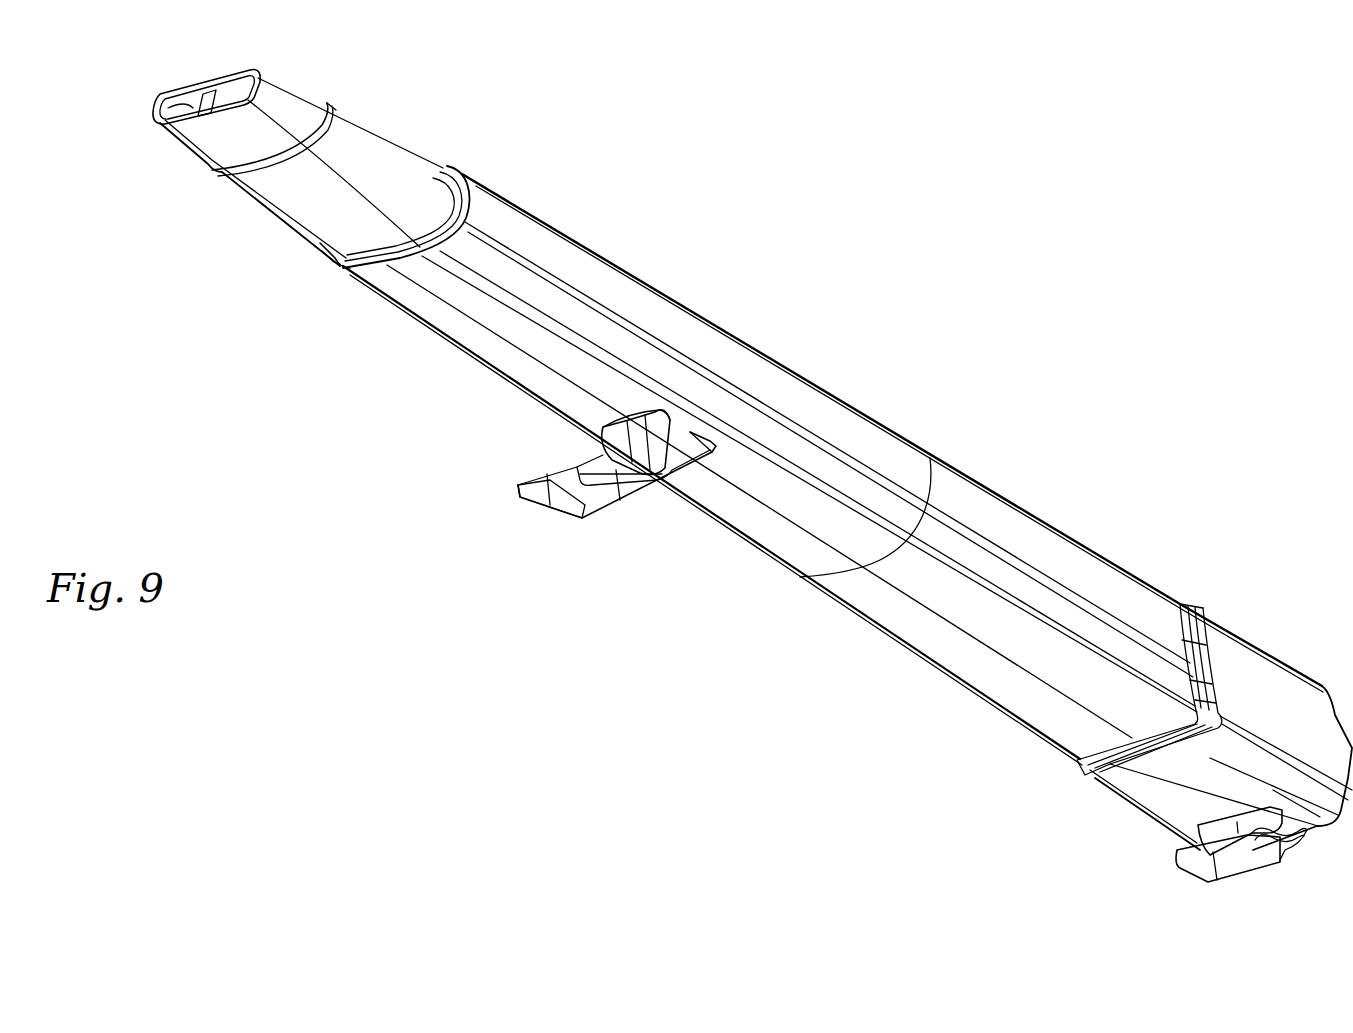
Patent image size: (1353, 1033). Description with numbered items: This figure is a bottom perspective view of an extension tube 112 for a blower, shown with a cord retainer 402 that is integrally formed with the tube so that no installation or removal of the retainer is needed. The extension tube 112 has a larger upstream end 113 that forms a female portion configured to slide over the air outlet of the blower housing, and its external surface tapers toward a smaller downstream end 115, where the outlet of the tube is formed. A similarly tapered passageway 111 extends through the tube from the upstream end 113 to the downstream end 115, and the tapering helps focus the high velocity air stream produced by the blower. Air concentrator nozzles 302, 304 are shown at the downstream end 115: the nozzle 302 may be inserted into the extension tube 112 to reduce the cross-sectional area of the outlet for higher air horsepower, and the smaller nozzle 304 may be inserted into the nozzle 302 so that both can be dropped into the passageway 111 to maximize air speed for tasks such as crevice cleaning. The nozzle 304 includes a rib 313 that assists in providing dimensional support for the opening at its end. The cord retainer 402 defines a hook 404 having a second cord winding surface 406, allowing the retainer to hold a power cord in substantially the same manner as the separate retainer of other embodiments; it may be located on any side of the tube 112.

The passageway 111 is at (217, 90).
The extension tube 112 is at (862, 407).
The upstream end 113 is at (1170, 600).
The downstream end 115 is at (372, 270).
The nozzle 302 is at (383, 136).
The nozzle 304 is at (283, 92).
The rib 313 is at (187, 104).
The cord retainer 402 is at (612, 518).
The hook 404 is at (520, 497).
The second cord winding surface 406 is at (598, 470).